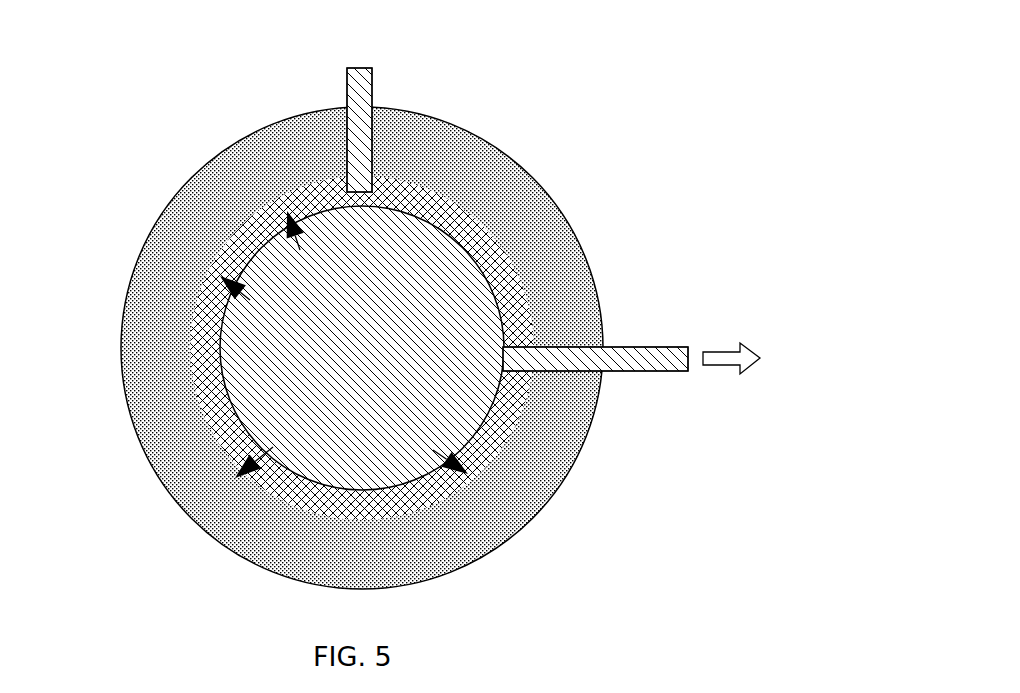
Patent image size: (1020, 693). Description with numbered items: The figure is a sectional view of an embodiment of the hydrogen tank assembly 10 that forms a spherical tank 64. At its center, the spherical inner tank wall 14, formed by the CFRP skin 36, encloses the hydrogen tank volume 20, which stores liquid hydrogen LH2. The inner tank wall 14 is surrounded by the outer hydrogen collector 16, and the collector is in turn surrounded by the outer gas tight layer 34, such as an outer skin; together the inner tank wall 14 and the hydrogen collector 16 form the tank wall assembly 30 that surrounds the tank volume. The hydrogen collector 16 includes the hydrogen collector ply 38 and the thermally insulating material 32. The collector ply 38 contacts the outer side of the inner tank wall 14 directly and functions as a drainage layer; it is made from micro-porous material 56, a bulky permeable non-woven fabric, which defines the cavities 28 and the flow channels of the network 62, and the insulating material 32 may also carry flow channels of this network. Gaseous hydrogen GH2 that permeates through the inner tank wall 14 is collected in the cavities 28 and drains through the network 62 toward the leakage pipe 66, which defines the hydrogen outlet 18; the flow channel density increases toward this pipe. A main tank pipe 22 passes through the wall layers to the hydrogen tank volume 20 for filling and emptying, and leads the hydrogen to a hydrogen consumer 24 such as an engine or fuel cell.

The hydrogen tank assembly 10 is at (550, 548).
The inner tank wall 14 is at (519, 299).
The outer hydrogen collector 16 is at (522, 421).
The hydrogen outlet 18 is at (347, 99).
The hydrogen tank volume 20 is at (370, 257).
The main tank pipe 22 is at (624, 367).
The hydrogen consumer 24 is at (731, 375).
The cavity 28 is at (314, 498).
The tank wall assembly 30 is at (204, 164).
The thermally insulating material 32 is at (494, 164).
The gas tight layer 34 is at (466, 120).
The CFRP skin 36 is at (350, 530).
The hydrogen collector ply 38 is at (504, 246).
The micro-porous material 56 is at (500, 463).
The network 62 is at (318, 520).
The spherical tank 64 is at (489, 588).
The leakage pipe 66 is at (362, 105).
The liquid hydrogen LH2 is at (327, 243).
The gaseous hydrogen GH2 is at (237, 477).